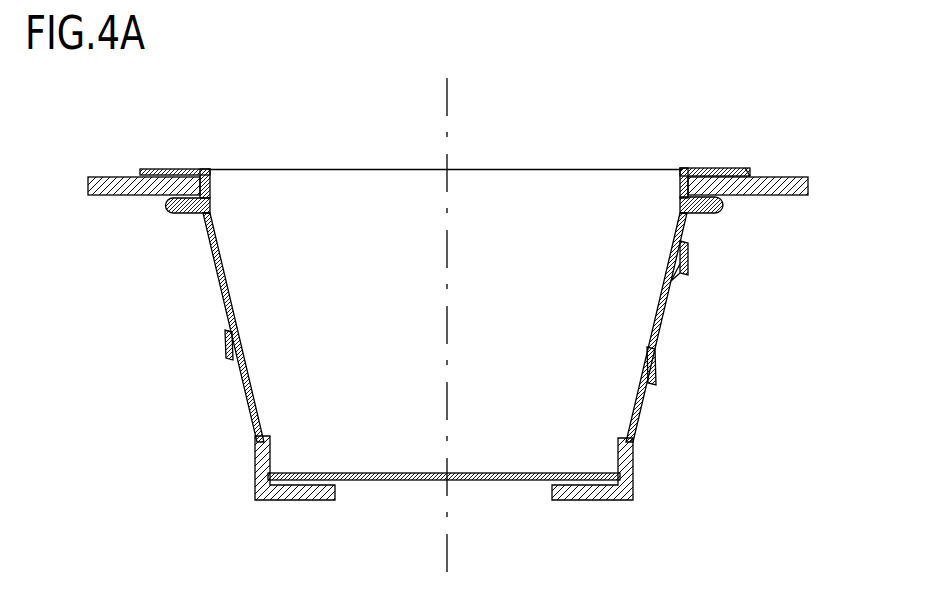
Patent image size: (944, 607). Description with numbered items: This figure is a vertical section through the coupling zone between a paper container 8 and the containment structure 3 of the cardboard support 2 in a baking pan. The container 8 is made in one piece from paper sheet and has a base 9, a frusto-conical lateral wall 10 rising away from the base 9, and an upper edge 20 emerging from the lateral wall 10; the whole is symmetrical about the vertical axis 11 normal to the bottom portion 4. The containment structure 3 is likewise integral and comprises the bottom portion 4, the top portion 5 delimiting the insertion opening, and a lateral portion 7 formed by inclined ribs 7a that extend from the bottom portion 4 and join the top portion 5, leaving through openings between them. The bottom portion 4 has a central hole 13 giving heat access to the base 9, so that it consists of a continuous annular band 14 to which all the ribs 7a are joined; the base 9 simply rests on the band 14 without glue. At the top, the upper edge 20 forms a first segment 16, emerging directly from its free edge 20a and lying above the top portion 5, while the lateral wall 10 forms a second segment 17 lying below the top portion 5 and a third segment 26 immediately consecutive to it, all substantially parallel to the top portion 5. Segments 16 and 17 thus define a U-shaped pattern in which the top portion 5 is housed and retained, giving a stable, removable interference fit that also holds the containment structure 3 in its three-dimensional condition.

The support 2 is at (780, 197).
The containment structure 3 is at (270, 343).
The bottom portion 4 is at (605, 518).
The top portion 5 is at (201, 183).
The lateral portion 7 is at (183, 305).
The rib 7a is at (226, 336).
The container 8 is at (650, 300).
The base 9 is at (483, 481).
The lateral wall 10 is at (235, 318).
The axis 11 is at (470, 110).
The central hole 13 is at (335, 490).
The continuous annular band 14 is at (583, 500).
The first segment 16 is at (502, 137).
The second segment 17 is at (205, 210).
The upper edge 20 is at (772, 142).
The free edge 20a is at (750, 177).
The third segment 26 is at (176, 203).